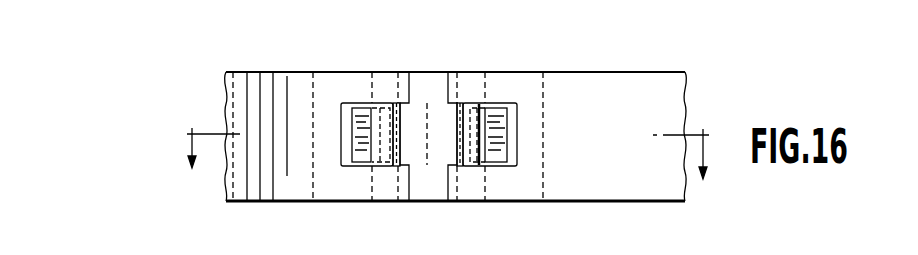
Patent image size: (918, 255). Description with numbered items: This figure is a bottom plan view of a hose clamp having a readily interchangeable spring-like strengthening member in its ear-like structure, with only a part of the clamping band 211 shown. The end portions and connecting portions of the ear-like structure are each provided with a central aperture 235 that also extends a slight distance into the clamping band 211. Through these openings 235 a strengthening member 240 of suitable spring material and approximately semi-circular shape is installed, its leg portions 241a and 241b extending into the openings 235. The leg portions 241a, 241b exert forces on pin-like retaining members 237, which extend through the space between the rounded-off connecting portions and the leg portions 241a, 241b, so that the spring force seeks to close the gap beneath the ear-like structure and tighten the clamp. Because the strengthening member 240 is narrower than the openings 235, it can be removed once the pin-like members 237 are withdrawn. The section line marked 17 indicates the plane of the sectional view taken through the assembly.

The clamping band 211 is at (273, 90).
The central aperture 235 is at (347, 118).
The pin-like retaining member 237 is at (463, 125).
The strengthening member 240 is at (434, 163).
The leg portion 241a is at (358, 155).
The leg portion 241b is at (497, 152).
The section line 17- 17 is at (450, 153).